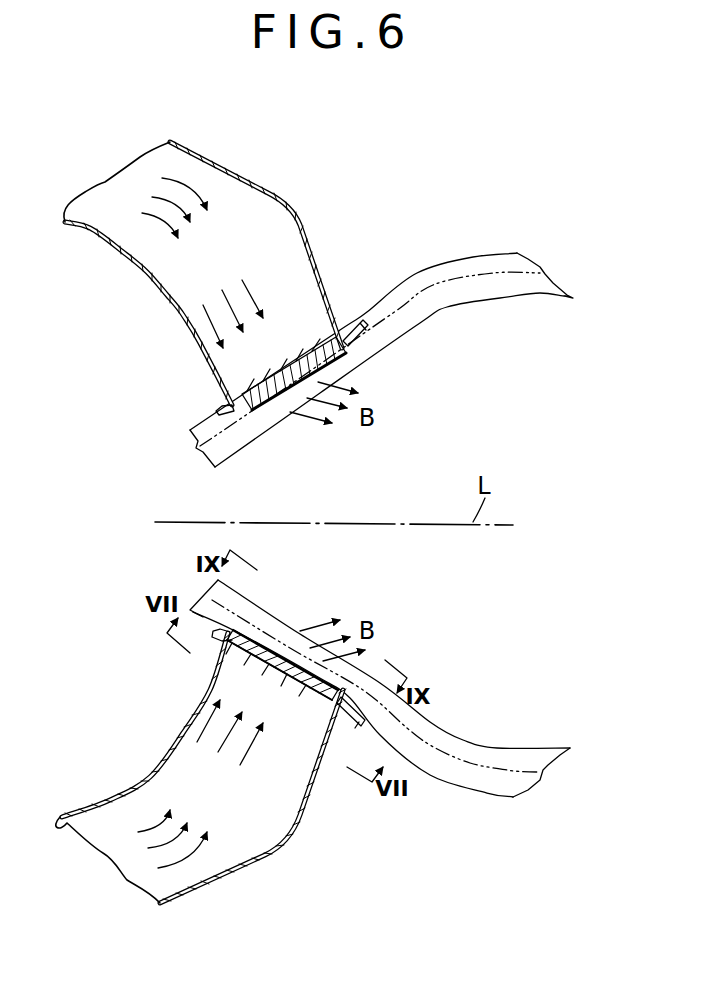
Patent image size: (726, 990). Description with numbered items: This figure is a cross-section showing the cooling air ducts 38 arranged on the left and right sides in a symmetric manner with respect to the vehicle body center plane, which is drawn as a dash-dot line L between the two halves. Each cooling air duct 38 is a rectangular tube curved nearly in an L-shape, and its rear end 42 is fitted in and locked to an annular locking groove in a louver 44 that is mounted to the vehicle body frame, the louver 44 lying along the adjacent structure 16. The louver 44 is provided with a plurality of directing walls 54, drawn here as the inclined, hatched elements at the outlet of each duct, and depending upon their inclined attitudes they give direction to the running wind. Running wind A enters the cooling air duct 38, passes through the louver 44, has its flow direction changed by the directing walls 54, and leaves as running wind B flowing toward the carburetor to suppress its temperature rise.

The air duct 16 is at (417, 272).
The cooling air duct 38 is at (172, 300).
The rear end 42 is at (222, 405).
The louver 44 is at (266, 412).
The directing walls 54 is at (312, 365).